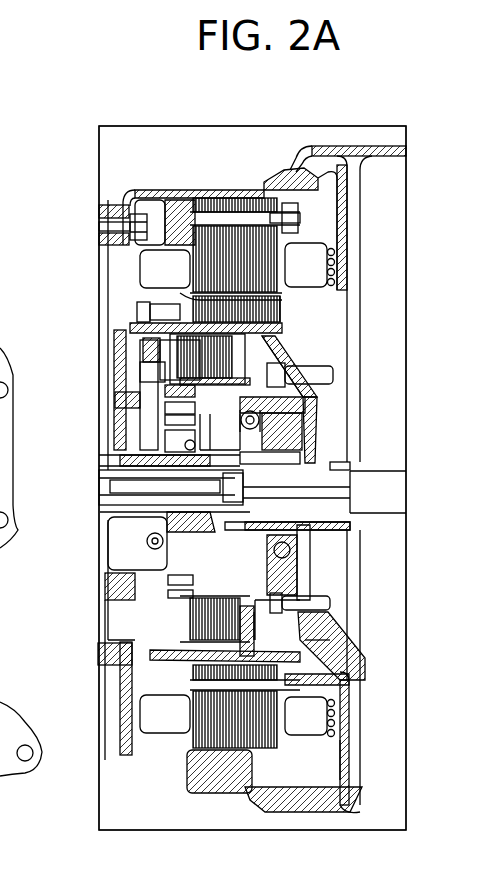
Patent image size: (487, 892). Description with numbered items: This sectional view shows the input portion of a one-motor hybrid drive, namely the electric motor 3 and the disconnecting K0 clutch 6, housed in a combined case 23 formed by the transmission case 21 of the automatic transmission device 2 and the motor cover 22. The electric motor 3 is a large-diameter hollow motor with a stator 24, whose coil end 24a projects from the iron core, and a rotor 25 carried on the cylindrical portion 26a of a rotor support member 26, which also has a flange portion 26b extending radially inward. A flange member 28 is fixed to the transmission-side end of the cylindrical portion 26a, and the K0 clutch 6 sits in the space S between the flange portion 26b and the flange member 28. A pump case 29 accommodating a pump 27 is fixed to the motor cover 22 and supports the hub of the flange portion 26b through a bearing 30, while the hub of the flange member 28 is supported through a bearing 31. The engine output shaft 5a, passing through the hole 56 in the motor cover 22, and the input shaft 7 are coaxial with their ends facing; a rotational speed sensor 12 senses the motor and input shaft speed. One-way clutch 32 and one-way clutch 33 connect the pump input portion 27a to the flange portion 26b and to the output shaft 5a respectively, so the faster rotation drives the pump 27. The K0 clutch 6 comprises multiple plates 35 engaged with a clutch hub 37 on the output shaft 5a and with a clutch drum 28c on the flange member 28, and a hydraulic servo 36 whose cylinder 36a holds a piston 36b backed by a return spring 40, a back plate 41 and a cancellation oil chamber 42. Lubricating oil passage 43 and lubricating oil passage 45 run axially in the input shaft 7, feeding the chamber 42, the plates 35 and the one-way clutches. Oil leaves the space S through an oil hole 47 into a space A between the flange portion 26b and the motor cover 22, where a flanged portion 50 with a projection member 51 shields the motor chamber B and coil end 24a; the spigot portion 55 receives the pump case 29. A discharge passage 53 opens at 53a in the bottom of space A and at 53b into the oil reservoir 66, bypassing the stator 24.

The combined case 23 is at (313, 100).
The transmission case 21 is at (281, 175).
The motor cover 22 is at (305, 162).
The stator 24 is at (213, 200).
The electric motor 3 is at (308, 234).
The rotor 25 is at (190, 300).
The automatic transmission device 2 is at (92, 296).
The rotor support member 26 is at (145, 328).
The rotational speed sensor 12 is at (150, 350).
The flange member 28 is at (168, 382).
The return spring 40 is at (170, 402).
The back plate 41 is at (170, 420).
The cancellation oil chamber 42 is at (178, 446).
The input shaft 7 is at (165, 480).
The lubricating oil passage 43 is at (170, 488).
The lubricating oil passage 45 is at (172, 502).
The output shaft 5a is at (408, 495).
The piston 36b is at (165, 517).
The bearing 31 is at (160, 538).
The hydraulic servo 36 is at (170, 560).
The cylinder 36a is at (175, 584).
The multiple plates 35 is at (180, 630).
The clutch drum 28c is at (150, 676).
The flanged portion 50 is at (316, 302).
The projection member 51 is at (300, 320).
The cylindrical portion 26a is at (330, 350).
The oil hole 47 is at (242, 352).
The K0 clutch 6 is at (290, 364).
The flange portion 26b is at (300, 388).
The pump case 29 is at (330, 410).
The pump 27 is at (322, 440).
The hole 56 is at (350, 470).
The input portion of the pump 27a is at (278, 482).
The one-way clutch 33 is at (258, 512).
The one-way clutch 32 is at (295, 552).
The bearing 30 is at (300, 570).
The clutch hub 37 is at (300, 592).
The space S is at (252, 618).
The spigot portion 55 is at (320, 620).
The space A is at (320, 645).
The opening 53a is at (340, 676).
The discharge passage 53 is at (355, 690).
The coil end 24a is at (320, 712).
The motor chamber B is at (325, 757).
The oil reservoir 66 is at (265, 788).
The opening 53b is at (348, 785).